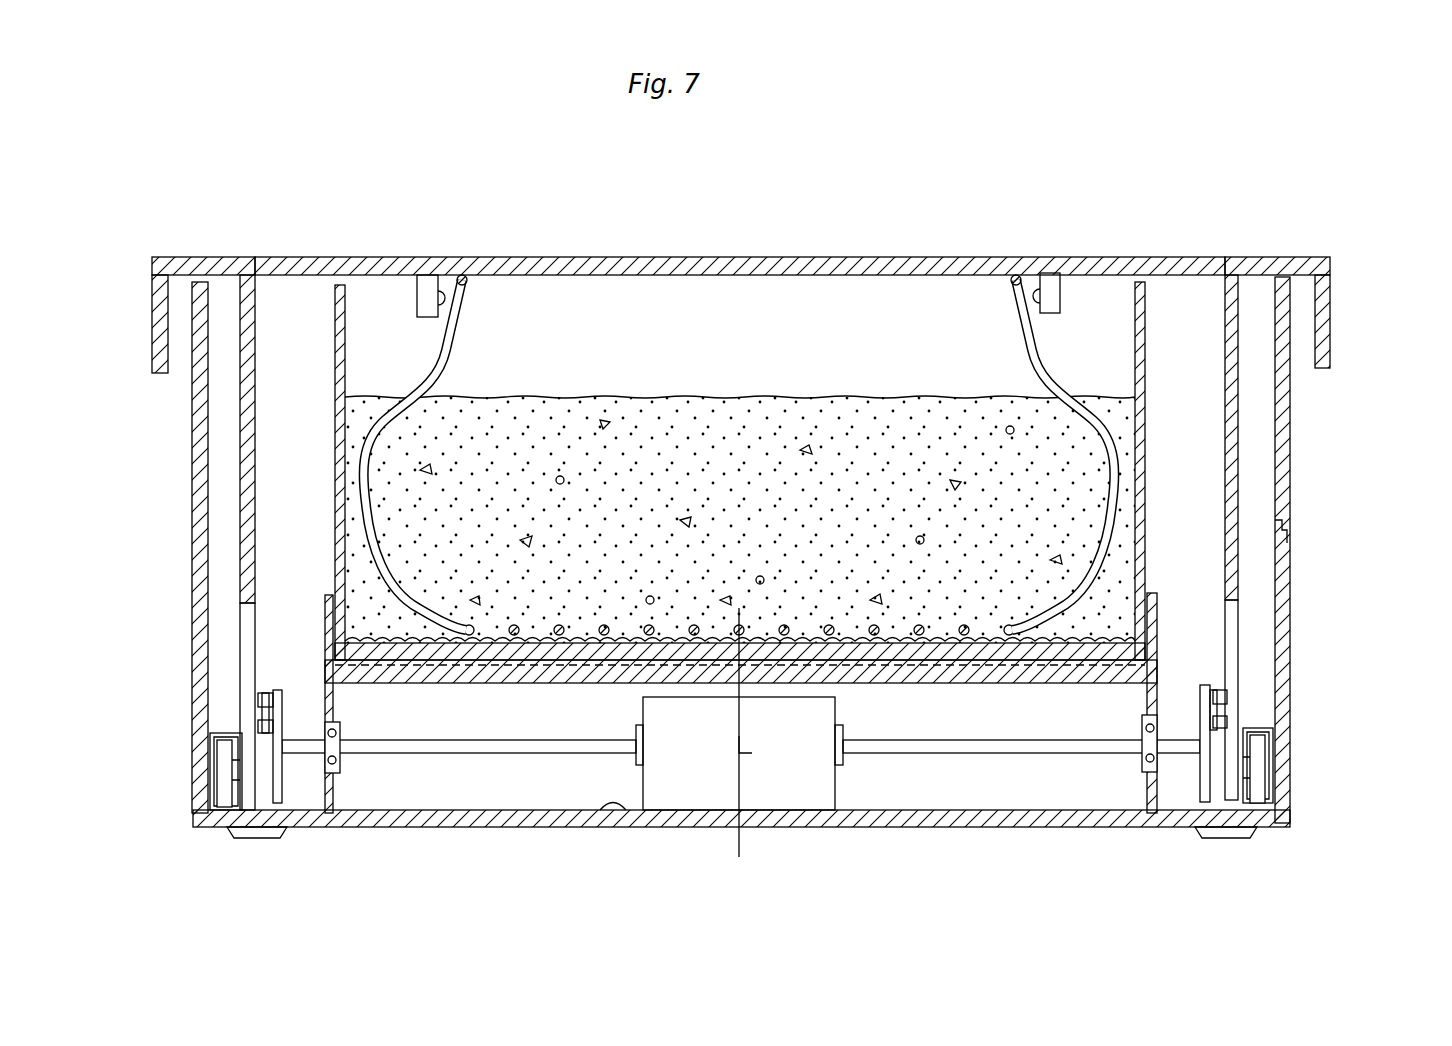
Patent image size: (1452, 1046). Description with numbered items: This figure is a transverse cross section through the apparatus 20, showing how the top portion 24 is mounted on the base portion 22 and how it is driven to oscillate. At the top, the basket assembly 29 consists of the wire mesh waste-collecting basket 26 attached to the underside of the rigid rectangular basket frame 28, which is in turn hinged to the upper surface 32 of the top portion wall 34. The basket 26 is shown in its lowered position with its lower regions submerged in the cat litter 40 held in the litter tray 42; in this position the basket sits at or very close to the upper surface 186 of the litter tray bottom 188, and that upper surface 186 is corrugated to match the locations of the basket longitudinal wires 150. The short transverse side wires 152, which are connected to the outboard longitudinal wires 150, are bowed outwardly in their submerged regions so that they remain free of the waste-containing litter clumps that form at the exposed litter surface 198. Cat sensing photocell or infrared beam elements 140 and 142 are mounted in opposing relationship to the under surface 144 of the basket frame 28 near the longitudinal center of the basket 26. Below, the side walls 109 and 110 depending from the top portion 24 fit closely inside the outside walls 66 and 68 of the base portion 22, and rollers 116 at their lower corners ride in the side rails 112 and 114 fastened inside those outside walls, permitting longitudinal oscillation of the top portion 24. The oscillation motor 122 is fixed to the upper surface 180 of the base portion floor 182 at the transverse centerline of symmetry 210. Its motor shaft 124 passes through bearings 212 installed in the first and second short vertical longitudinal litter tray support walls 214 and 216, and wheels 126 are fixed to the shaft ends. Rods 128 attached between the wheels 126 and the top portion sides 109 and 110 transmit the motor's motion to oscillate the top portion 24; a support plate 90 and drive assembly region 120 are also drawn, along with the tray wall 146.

The apparatus 20 is at (867, 210).
The base portion 22 is at (1296, 658).
The top portion 24 is at (1366, 319).
The waste-collecting basket 26 is at (1044, 329).
The basket frame 28 is at (335, 257).
The basket assembly 29 is at (478, 248).
The upper surface 32 is at (1266, 256).
The top portion wall 34 is at (1330, 288).
The cat litter 40 is at (655, 396).
The litter tray 42 is at (1150, 533).
The outside wall 66 is at (1290, 430).
The outside wall 68 is at (192, 448).
The support plate 90 is at (485, 684).
The side wall 109 is at (1240, 563).
The side wall 110 is at (242, 517).
The side rail 112 is at (1272, 752).
The side rail 114 is at (212, 750).
The rollers 116 is at (222, 785).
The drive assembly 120 is at (620, 778).
The oscillation motor 122 is at (840, 790).
The motor shaft 124 is at (490, 760).
The wheels 126 is at (280, 793).
The rods 128 is at (258, 702).
The cat sensing beam element 140 is at (468, 284).
The cat sensing beam element 142 is at (1013, 279).
The under surface 144 is at (1185, 495).
The left bowl wall 146 is at (335, 528).
The longitudinal wires 150 is at (812, 625).
The side wires 152 is at (455, 336).
The upper surface 180 is at (613, 806).
The base portion floor 182 is at (723, 827).
The upper surface 186 is at (1100, 633).
The litter tray bottom 188 is at (1010, 652).
The exposed litter surface 198 is at (778, 378).
The transverse centerline of symmetry 210 is at (740, 800).
The bearings 212 is at (335, 760).
The litter tray support wall 214 is at (333, 705).
The litter tray support wall 216 is at (1157, 635).